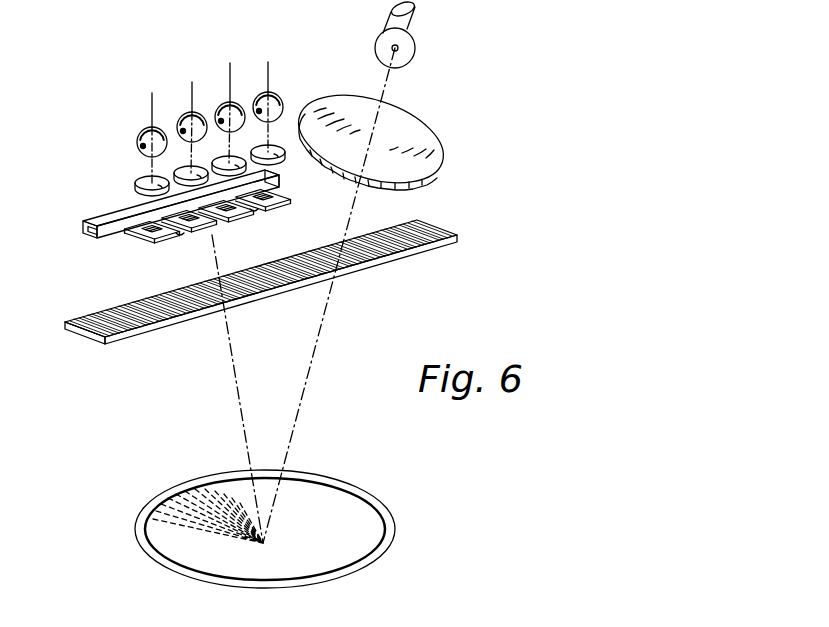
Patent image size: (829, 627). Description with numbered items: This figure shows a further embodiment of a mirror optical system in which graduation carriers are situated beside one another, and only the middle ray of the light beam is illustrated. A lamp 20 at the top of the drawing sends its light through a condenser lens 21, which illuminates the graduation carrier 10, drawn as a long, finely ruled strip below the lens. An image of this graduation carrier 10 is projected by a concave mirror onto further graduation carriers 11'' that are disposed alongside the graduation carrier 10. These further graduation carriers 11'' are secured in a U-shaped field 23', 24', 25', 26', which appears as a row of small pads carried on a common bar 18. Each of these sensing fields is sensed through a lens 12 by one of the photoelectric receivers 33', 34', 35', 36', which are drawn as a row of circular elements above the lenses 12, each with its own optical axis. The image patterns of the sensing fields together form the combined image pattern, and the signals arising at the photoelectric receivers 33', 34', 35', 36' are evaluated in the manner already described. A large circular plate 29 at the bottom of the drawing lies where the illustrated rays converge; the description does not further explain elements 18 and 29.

The graduation carrier 10 is at (409, 239).
The further graduation carriers 11'' is at (241, 245).
The lens 12 is at (175, 168).
The channel bar 18 is at (101, 219).
The lamp 20 is at (406, 52).
The condenser lens 21 is at (399, 114).
The U-shaped field 23' is at (137, 254).
The U-shaped field 24' is at (146, 200).
The U-shaped field 25' is at (231, 234).
The U-shaped field 26' is at (294, 204).
The screen plate 29 is at (333, 510).
The photoelectric receiver 33' is at (133, 135).
The photoelectric receiver 34' is at (185, 113).
The photoelectric receiver 35' is at (239, 103).
The photoelectric receiver 36' is at (286, 105).